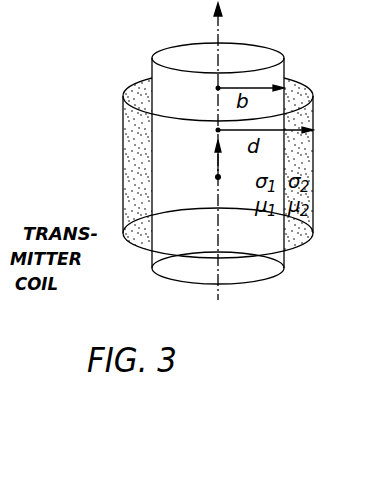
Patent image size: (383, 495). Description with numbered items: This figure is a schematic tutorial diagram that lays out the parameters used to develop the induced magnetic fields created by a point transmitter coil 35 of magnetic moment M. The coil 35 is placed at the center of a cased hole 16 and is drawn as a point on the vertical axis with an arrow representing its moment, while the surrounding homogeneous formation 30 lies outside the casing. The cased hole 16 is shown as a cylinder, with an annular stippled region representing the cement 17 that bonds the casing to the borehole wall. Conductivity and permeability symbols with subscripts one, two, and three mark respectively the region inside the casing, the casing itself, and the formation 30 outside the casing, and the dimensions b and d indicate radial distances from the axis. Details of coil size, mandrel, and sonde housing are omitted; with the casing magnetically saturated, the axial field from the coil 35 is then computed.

The cased hole 16 is at (178, 55).
The cement 17 is at (140, 165).
The point transmitter coil 35 is at (218, 177).
The homogeneous formation 30 is at (352, 155).